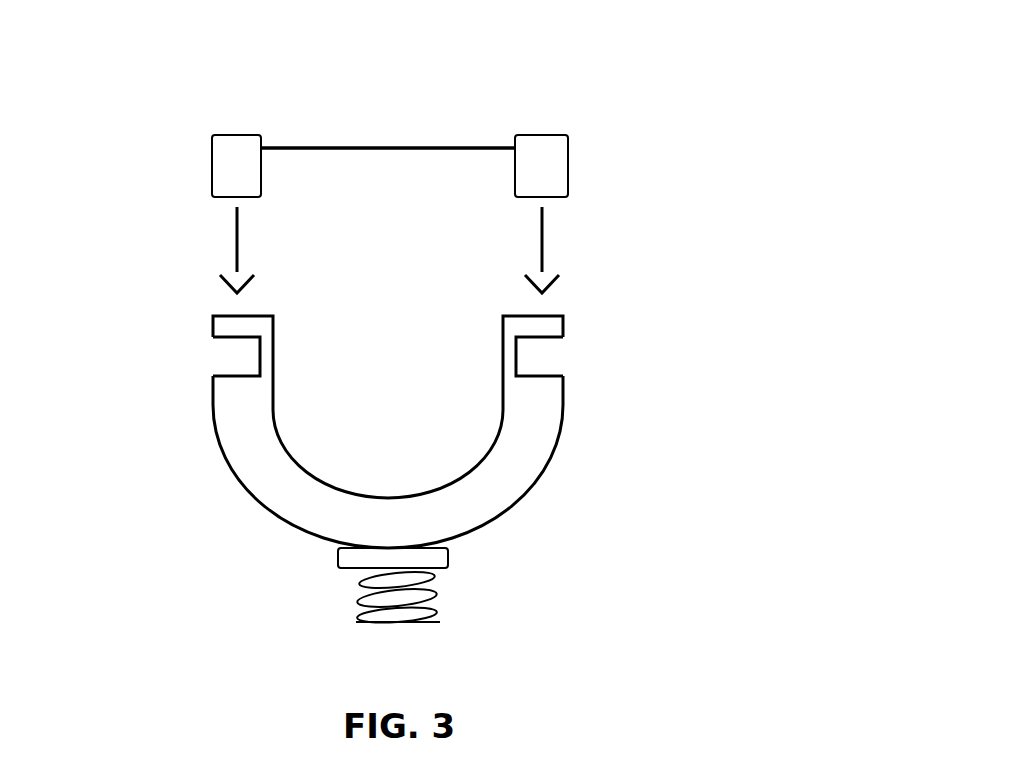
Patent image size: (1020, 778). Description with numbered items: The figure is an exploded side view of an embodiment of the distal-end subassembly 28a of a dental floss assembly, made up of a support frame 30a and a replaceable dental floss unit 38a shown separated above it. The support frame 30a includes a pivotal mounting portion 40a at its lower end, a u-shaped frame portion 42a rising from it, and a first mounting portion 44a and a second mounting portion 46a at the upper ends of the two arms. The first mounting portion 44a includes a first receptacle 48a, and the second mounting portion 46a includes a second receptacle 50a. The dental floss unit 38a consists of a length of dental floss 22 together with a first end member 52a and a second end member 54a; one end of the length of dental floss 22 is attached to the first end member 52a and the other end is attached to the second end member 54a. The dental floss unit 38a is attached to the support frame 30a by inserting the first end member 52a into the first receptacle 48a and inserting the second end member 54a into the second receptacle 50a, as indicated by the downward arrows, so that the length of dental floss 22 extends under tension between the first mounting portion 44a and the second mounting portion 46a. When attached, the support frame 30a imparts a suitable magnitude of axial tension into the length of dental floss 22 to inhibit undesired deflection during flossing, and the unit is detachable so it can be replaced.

The length of dental floss 22 is at (357, 145).
The distal-end subassembly 28a is at (739, 155).
The support frame 30a is at (613, 442).
The dental floss unit 38a is at (518, 54).
The pivotal mounting portion 40a is at (275, 616).
The u-shaped frame portion 42a is at (240, 475).
The first mounting portion 44a is at (157, 296).
The second mounting portion 46a is at (653, 297).
The first receptacle 48a is at (194, 353).
The second receptacle 50a is at (591, 352).
The first end member 52a is at (217, 137).
The second end member 54a is at (567, 135).